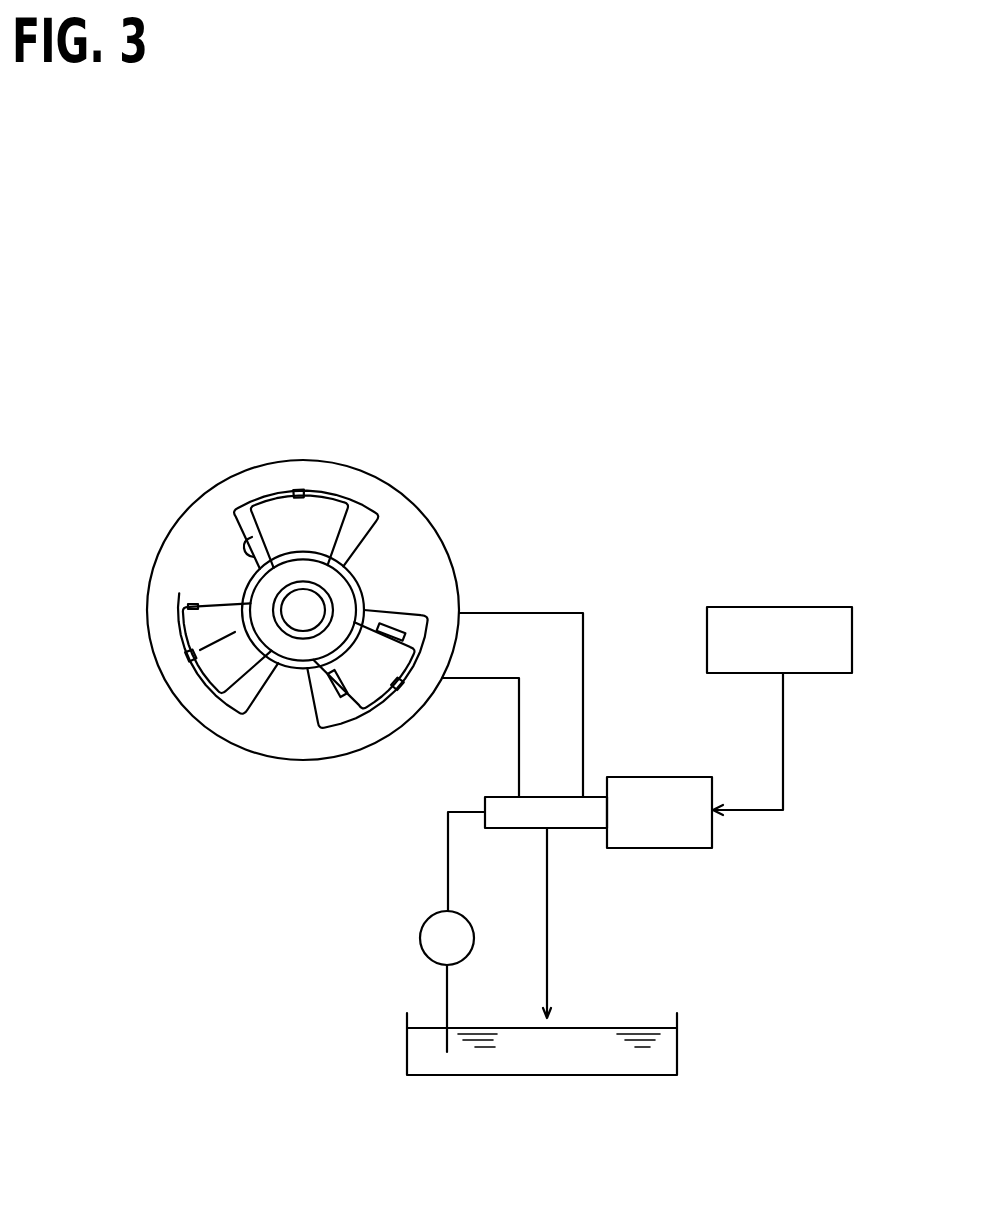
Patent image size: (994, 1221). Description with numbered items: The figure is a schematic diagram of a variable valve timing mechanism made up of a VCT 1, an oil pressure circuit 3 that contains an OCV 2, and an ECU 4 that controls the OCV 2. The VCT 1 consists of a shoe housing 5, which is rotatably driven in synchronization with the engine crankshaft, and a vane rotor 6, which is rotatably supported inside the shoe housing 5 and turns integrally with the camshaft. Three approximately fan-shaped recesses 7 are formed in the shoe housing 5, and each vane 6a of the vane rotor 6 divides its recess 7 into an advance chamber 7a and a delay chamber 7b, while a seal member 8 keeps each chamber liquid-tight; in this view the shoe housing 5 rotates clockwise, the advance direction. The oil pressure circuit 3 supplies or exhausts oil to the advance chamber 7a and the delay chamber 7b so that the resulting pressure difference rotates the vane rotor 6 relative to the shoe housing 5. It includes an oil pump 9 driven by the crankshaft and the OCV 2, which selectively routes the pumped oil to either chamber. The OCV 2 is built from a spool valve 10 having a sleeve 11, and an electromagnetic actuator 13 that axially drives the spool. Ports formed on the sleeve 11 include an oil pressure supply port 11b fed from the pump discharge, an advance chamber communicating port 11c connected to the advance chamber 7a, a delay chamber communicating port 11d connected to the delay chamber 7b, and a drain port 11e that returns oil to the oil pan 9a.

The VCT 1 is at (190, 482).
The OCV 2 is at (580, 861).
The oil pressure circuit 3 is at (605, 702).
The ECU 4 is at (797, 607).
The shoe housing 5 is at (398, 495).
The vane rotor 6 is at (358, 580).
The vane 6a is at (327, 505).
The recess 7 is at (232, 532).
The advance chamber 7a is at (240, 505).
The delay chamber 7b is at (362, 505).
The seal member 8 is at (298, 488).
The oil pump 9 is at (420, 936).
The oil pan 9a is at (678, 1052).
The spool valve 10 is at (577, 818).
The sleeve 11 is at (502, 802).
The oil pressure supply port 11b is at (482, 818).
The advance chamber communicating port 11c is at (587, 795).
The delay chamber communicating port 11d is at (522, 795).
The drain port 11e is at (547, 830).
The electromagnetic actuator 13 is at (683, 788).